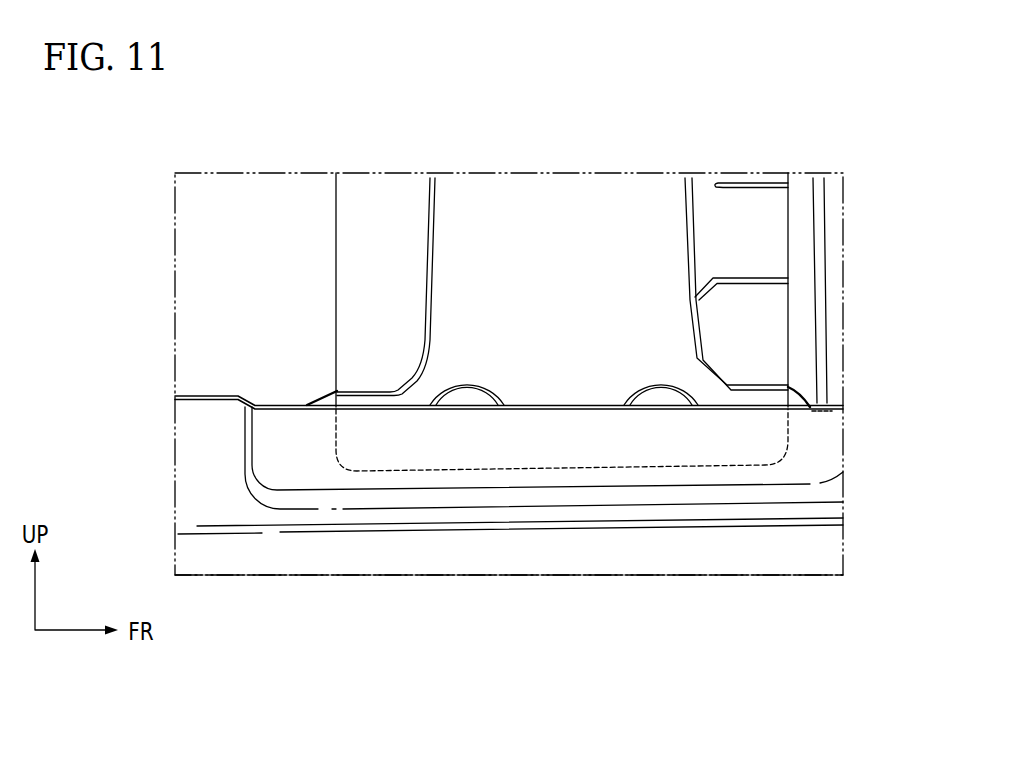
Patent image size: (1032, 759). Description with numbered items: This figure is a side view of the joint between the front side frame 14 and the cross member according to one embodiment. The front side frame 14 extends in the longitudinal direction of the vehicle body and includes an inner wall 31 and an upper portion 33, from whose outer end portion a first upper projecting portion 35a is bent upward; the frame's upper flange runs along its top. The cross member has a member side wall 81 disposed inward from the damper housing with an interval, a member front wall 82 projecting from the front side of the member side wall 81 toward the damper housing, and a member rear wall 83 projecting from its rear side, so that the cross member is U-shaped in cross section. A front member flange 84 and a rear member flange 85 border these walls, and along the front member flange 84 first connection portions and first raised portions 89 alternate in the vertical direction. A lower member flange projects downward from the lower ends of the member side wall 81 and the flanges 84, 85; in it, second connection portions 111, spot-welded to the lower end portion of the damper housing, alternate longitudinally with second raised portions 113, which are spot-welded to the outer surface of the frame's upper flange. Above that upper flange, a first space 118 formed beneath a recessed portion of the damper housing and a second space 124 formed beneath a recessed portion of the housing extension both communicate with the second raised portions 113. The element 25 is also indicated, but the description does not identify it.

The front side frame 14 is at (320, 574).
The partition panel 25 is at (336, 213).
The inner wall 31 is at (504, 557).
The upper portion 33 is at (573, 523).
The first upper projecting portion 35a is at (208, 493).
The member side wall 81 is at (552, 195).
The member front wall 82 is at (687, 200).
The member rear wall 83 is at (430, 193).
The front member flange 84 is at (779, 204).
The rear member flange 85 is at (360, 267).
The first raised portions 89 is at (772, 248).
The second connection portions 111 is at (467, 397).
The second raised portions 113 is at (370, 402).
The first space 118 is at (323, 397).
The second space 124 is at (797, 398).